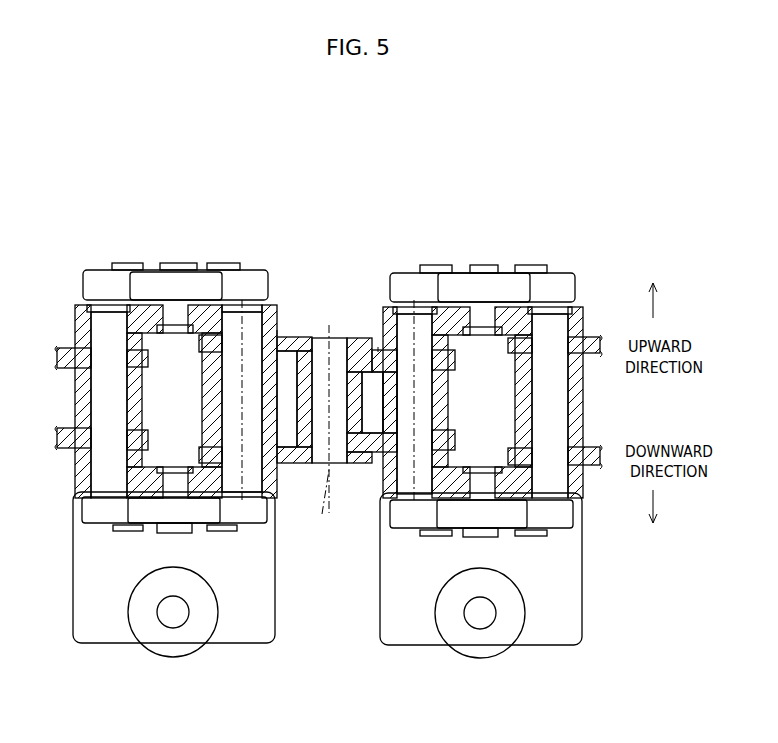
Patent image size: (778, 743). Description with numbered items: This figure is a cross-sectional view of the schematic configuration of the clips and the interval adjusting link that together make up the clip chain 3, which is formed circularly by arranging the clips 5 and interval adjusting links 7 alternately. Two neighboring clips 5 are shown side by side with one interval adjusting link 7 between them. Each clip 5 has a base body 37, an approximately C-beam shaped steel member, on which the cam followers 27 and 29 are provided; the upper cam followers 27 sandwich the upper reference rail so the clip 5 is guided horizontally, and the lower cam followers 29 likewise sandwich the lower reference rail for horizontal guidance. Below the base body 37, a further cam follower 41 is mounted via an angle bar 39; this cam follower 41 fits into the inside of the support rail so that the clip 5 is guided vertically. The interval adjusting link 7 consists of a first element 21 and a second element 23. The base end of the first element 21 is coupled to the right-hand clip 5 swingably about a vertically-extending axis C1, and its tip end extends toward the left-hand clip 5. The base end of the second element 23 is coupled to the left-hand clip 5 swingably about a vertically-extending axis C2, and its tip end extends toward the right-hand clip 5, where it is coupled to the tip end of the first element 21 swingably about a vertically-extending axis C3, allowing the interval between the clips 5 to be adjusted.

The clip chain 3 is at (443, 142).
The clip 5 is at (95, 645).
The interval adjusting link 7 is at (341, 268).
The first element 21 is at (348, 336).
The second element 23 is at (308, 338).
The cam follower 27 is at (408, 272).
The cam follower 29 is at (577, 508).
The base body 37 is at (75, 310).
The angle bar 39 is at (260, 593).
The cam follower 41 is at (188, 643).
The vertically-extending axis C1 is at (378, 347).
The vertically-extending axis C2 is at (277, 330).
The vertically-extending axis C3 is at (322, 503).